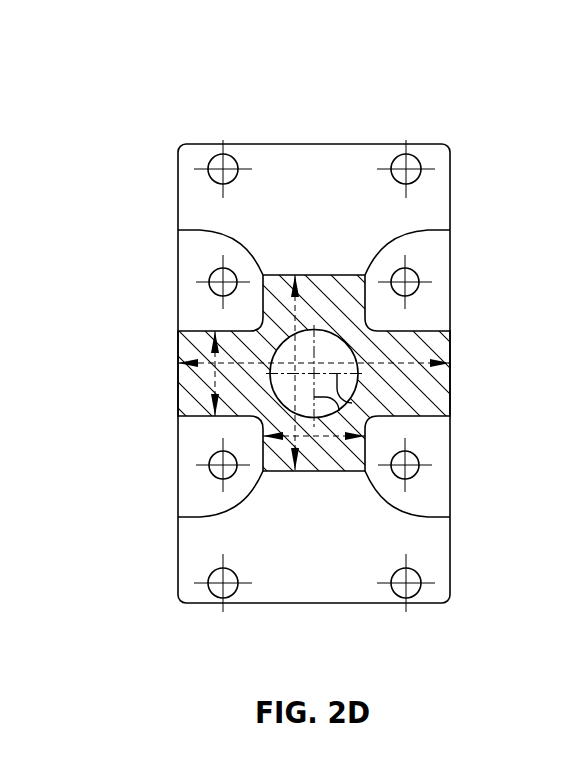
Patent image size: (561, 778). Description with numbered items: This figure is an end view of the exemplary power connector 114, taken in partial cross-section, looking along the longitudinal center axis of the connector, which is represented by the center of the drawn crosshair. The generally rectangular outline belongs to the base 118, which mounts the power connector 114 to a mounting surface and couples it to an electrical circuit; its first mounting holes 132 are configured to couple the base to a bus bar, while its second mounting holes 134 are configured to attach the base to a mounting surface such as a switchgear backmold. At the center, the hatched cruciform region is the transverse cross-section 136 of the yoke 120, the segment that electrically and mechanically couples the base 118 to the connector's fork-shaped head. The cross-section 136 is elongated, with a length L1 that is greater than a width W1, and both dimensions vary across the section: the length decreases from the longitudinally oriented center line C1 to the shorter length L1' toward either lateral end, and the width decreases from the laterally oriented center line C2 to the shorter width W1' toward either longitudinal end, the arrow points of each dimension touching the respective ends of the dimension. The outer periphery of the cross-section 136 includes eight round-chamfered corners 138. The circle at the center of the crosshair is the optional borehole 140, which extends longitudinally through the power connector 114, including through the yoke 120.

The power connector 114 is at (174, 88).
The base 118 is at (162, 157).
The yoke 120 is at (163, 313).
The first mounting holes 132 is at (212, 279).
The second mounting holes 134 is at (230, 157).
The transverse cross-section 136 is at (356, 282).
The round-chamfered corners 138 is at (264, 274).
The borehole 140 is at (215, 402).
The width W1 is at (314, 332).
The width W1' is at (156, 373).
The length L1 is at (340, 346).
The length L1' is at (284, 410).
The longitudinally oriented center line C1 is at (352, 400).
The laterally oriented center line C2 is at (337, 416).